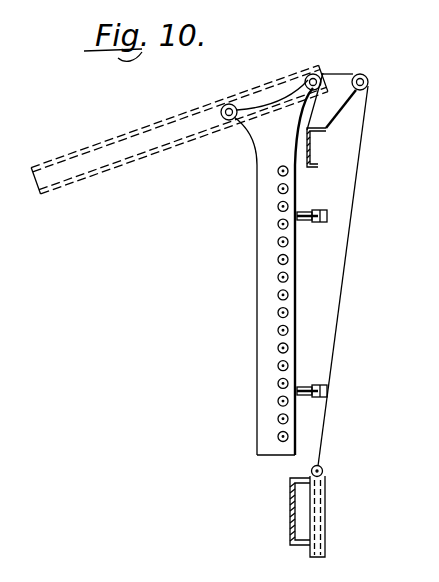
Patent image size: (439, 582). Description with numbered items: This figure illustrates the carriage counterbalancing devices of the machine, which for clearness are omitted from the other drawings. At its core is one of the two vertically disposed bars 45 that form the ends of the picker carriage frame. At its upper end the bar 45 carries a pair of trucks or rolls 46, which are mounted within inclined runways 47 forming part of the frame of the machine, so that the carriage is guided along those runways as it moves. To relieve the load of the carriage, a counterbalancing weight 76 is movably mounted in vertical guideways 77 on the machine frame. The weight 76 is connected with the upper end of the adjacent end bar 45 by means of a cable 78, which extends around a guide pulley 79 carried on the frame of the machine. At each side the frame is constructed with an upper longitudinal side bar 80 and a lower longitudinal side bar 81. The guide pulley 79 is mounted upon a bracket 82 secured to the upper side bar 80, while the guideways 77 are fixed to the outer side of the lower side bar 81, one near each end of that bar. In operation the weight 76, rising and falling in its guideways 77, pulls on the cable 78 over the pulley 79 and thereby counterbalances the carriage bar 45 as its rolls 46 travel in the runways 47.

The vertically disposed bar 45 is at (268, 143).
The trucks or rolls 46 is at (229, 104).
The inclined runways 47 is at (82, 153).
The counterbalancing weight 76 is at (323, 470).
The vertical guideways 77 is at (326, 523).
The cable 78 is at (348, 242).
The guide pulley 79 is at (363, 74).
The upper longitudinal side bar 80 is at (312, 150).
The lower longitudinal side bar 81 is at (290, 512).
The bracket 82 is at (338, 110).